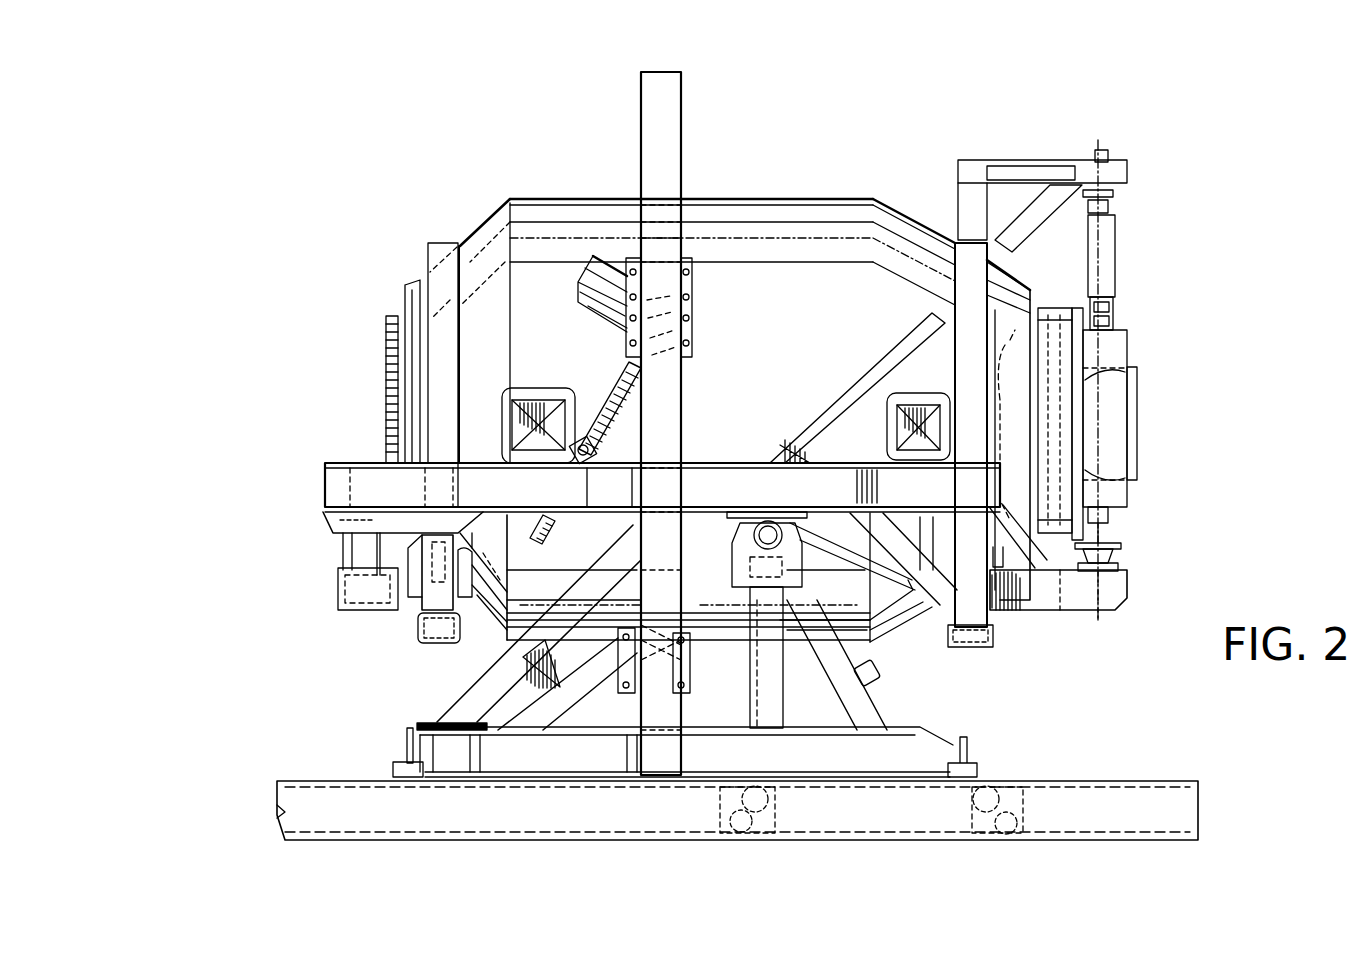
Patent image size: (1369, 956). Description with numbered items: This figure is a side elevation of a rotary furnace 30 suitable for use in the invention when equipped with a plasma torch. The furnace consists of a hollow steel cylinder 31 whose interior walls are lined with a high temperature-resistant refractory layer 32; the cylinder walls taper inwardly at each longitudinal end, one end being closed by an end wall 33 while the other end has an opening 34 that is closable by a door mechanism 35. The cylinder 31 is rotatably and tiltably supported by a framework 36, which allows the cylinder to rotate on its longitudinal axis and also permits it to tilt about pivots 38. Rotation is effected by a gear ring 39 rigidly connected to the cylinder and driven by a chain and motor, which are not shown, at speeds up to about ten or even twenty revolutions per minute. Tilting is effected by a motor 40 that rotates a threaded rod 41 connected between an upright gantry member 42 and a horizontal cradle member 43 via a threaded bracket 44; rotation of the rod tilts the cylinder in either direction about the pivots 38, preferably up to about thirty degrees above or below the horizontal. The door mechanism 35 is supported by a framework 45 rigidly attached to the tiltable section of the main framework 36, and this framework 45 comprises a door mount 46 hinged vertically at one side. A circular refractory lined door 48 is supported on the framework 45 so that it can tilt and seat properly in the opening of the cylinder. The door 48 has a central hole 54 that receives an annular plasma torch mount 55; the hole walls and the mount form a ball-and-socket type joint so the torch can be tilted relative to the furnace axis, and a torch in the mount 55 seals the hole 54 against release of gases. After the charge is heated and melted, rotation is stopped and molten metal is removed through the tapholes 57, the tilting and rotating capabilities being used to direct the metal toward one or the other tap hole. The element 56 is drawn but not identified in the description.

The rotary furnace 30 is at (858, 197).
The hollow steel cylinder 31 is at (576, 199).
The refractory layer 32 is at (530, 212).
The end wall 33 is at (386, 362).
The opening 34 is at (1012, 348).
The door mechanism 35 is at (1138, 325).
The framework 36 is at (318, 486).
The pivots 38 is at (880, 633).
The gear ring 39 is at (392, 318).
The motor 40 is at (592, 272).
The threaded rod 41 is at (610, 405).
The upright gantry member 42 is at (665, 186).
The horizontal cradle member 43 is at (760, 504).
The threaded bracket 44 is at (600, 452).
The framework 45 is at (982, 166).
The door mount 46 is at (1105, 256).
The circular refractory lined door 48 is at (1058, 352).
The central hole 54 is at (1112, 423).
The annular plasma torch mount 55 is at (1110, 400).
The foot 56 is at (393, 762).
The tapholes 57 is at (512, 402).